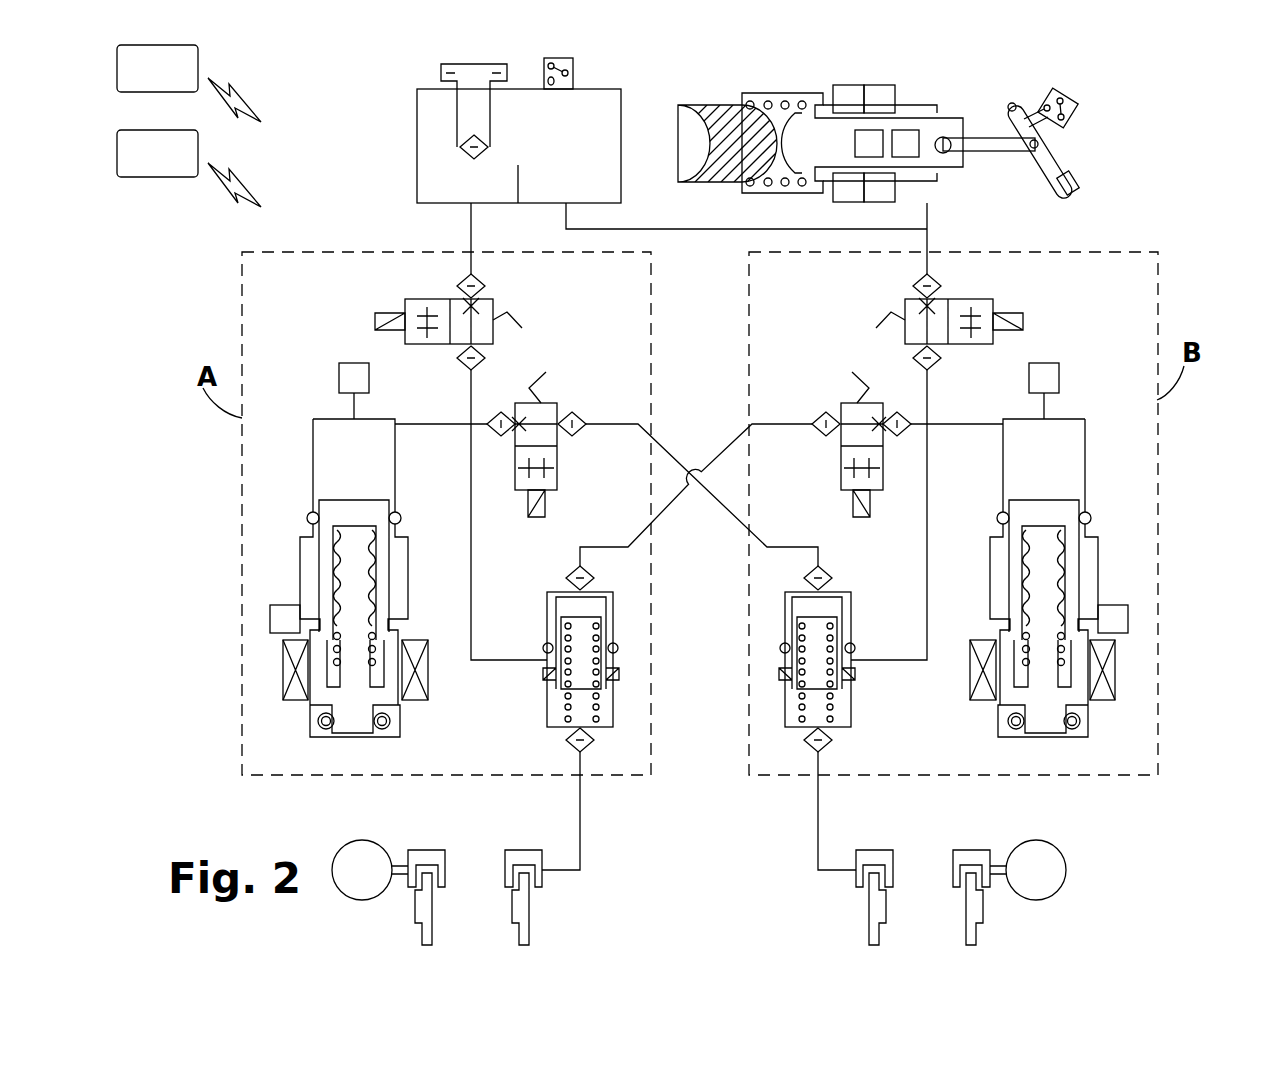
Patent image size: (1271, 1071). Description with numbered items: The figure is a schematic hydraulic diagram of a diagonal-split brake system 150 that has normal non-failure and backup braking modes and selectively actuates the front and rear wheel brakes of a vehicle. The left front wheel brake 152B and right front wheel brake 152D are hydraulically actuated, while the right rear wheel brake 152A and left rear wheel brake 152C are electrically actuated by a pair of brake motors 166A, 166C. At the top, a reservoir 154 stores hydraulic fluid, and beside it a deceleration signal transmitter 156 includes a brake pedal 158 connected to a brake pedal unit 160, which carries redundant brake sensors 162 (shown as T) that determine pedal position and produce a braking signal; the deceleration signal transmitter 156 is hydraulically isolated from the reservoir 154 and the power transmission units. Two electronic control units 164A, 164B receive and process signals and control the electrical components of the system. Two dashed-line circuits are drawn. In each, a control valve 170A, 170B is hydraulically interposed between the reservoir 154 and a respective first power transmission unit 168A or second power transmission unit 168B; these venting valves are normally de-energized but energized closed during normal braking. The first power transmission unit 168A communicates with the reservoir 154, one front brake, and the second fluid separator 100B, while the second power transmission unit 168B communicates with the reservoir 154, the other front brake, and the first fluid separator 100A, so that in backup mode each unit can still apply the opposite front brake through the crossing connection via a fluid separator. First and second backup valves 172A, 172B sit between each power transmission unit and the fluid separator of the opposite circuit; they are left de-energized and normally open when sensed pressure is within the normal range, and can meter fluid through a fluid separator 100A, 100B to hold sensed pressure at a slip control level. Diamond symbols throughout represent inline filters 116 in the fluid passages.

The brake system 150 is at (946, 134).
The reservoir 154 is at (599, 82).
The deceleration signal transmitter 156 is at (816, 114).
The brake pedal 158 is at (1090, 184).
The brake pedal unit 160 is at (1071, 165).
The brake sensor 162 is at (874, 85).
The electronic control unit 164A is at (190, 82).
The electronic control unit 164B is at (190, 167).
The brake motor 166A is at (1065, 860).
The brake motor 166C is at (343, 893).
The first power transmission unit 168A is at (292, 567).
The second power transmission unit 168B is at (1110, 534).
The first control valve 170A is at (493, 310).
The second control valve 170B is at (993, 310).
The first backup valve 172A is at (557, 405).
The second backup valve 172B is at (841, 405).
The inline filter 116 is at (595, 573).
The first fluid separator 100A is at (613, 750).
The second fluid separator 100B is at (788, 752).
The right rear wheel brake 152A is at (991, 852).
The left front wheel brake 152B is at (505, 862).
The left rear wheel brake 152C is at (408, 855).
The right front wheel brake 152D is at (856, 856).